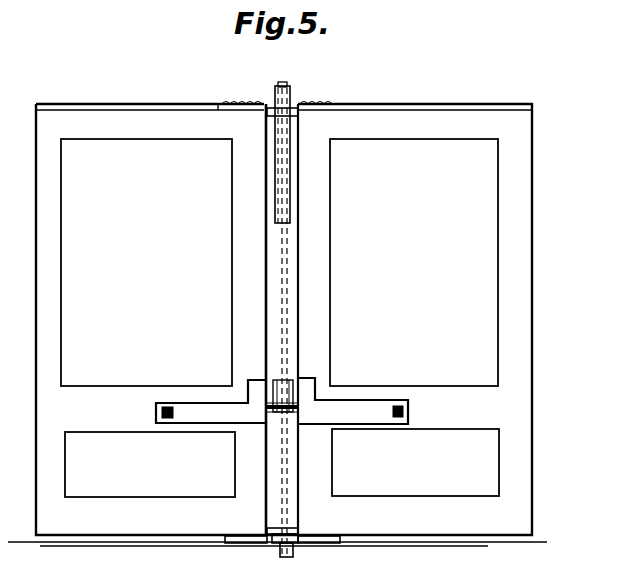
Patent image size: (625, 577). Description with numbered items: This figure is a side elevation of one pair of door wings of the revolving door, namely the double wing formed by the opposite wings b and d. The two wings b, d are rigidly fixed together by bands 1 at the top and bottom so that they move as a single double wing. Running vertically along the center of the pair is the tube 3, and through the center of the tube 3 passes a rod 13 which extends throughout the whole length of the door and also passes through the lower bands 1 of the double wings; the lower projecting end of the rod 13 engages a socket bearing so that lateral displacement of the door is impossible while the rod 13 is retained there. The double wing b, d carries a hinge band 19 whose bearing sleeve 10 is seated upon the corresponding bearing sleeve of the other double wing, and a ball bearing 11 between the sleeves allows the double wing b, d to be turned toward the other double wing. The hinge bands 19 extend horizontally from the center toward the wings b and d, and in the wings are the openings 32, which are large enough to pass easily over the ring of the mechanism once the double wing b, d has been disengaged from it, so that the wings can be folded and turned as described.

The band 1 is at (258, 84).
The tube 3 is at (283, 207).
The bearing sleeve 10 is at (265, 415).
The ball bearing 11 is at (300, 402).
The rod 13 is at (299, 311).
The hinge band 19 is at (198, 408).
The opening 32 is at (169, 415).
The wing b is at (148, 318).
The wing d is at (414, 317).